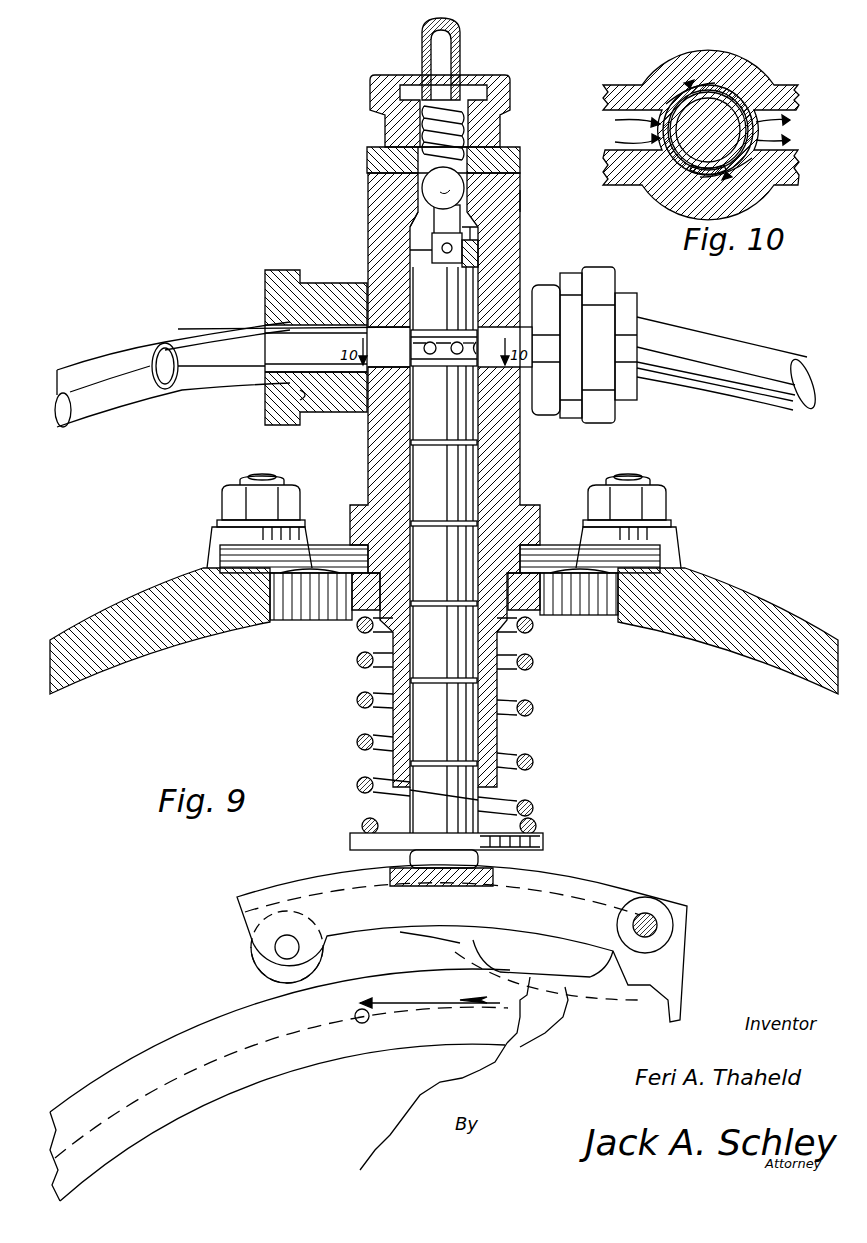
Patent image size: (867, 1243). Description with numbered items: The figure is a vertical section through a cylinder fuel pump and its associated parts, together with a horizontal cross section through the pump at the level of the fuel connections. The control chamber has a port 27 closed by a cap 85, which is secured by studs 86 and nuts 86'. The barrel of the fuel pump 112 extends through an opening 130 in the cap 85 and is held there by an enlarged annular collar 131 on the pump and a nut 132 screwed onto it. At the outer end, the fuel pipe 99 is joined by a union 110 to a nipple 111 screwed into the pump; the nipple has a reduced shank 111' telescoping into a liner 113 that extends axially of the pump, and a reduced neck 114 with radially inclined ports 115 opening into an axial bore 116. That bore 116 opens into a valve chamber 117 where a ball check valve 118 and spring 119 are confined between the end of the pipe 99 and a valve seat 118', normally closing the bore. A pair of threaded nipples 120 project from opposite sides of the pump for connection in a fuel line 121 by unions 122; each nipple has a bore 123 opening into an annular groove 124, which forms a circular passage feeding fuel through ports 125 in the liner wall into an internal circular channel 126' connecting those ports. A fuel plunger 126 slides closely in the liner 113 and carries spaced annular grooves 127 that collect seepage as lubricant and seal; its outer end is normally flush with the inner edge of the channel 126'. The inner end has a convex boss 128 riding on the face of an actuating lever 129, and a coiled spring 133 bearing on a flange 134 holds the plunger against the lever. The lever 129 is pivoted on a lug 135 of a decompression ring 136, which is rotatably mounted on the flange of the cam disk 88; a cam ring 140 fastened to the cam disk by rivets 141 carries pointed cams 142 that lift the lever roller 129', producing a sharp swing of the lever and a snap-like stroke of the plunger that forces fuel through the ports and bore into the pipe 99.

In FIG. 9, the fuel pipe 99 is at (460, 34).
In FIG. 9, the union 110 is at (498, 88).
In FIG. 9, the nipple 111 is at (461, 150).
In FIG. 9, the reduced shank 111' is at (520, 237).
In FIG. 9, the fuel pump 112 is at (512, 220).
In FIG. 10, the fuel pump 112 is at (660, 76).
In FIG. 9, the liner 113 is at (478, 326).
In FIG. 10, the liner 113 is at (708, 82).
In FIG. 9, the reduced neck 114 is at (418, 263).
In FIG. 9, the ports 115 is at (478, 258).
In FIG. 9, the axial bore 116 is at (513, 200).
In FIG. 9, the valve chamber 117 is at (428, 156).
In FIG. 9, the ball check valve 118 is at (391, 188).
In FIG. 9, the valve seat 118' is at (375, 229).
In FIG. 9, the spring 119 is at (420, 150).
In FIG. 9, the threaded nipples 120 is at (356, 398).
In FIG. 10, the threaded nipples 120 is at (628, 186).
In FIG. 9, the fuel line 121 is at (158, 333).
In FIG. 9, the unions 122 is at (272, 300).
In FIG. 9, the bore 123 is at (314, 342).
In FIG. 10, the bore 123 is at (790, 122).
In FIG. 9, the annular groove 124 is at (414, 364).
In FIG. 10, the annular groove 124 is at (728, 86).
In FIG. 9, the ports 125 is at (478, 348).
In FIG. 10, the ports 125 is at (738, 182).
In FIG. 9, the fuel plunger 126 is at (460, 550).
In FIG. 10, the fuel plunger 126 is at (708, 130).
In FIG. 9, the internal circular channel 126' is at (446, 327).
In FIG. 9, the annular grooves 127 is at (480, 443).
In FIG. 9, the convex boss 128 is at (492, 862).
In FIG. 9, the actuating lever 129 is at (462, 941).
In FIG. 9, the roller 129' is at (260, 947).
In FIG. 9, the opening 130 is at (350, 540).
In FIG. 9, the annular collar 131 is at (538, 506).
In FIG. 9, the nut 132 is at (524, 594).
In FIG. 9, the coiled spring 133 is at (534, 760).
In FIG. 9, the flange 134 is at (546, 842).
In FIG. 9, the lug 135 is at (690, 912).
In FIG. 9, the decompression ring 136 is at (568, 985).
In FIG. 9, the cam ring 140 is at (210, 1085).
In FIG. 9, the rivets 141 is at (360, 1024).
In FIG. 9, the cams 142 is at (490, 945).
In FIG. 9, the cap 85 is at (650, 548).
In FIG. 9, the studs 86 is at (457, 470).
In FIG. 9, the nuts 86' is at (447, 526).
In FIG. 9, the port 27 is at (300, 612).
In FIG. 9, the cam disk 88 is at (470, 1068).